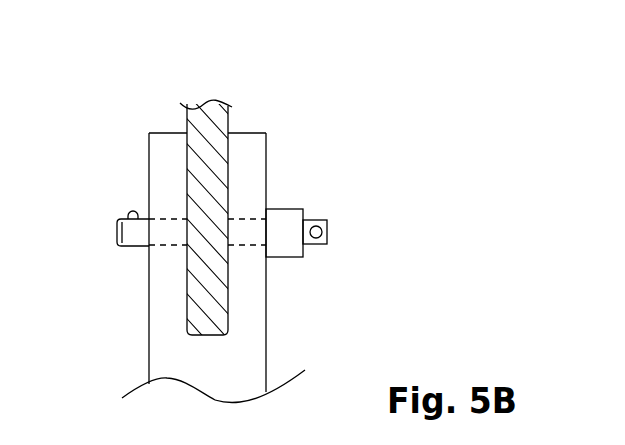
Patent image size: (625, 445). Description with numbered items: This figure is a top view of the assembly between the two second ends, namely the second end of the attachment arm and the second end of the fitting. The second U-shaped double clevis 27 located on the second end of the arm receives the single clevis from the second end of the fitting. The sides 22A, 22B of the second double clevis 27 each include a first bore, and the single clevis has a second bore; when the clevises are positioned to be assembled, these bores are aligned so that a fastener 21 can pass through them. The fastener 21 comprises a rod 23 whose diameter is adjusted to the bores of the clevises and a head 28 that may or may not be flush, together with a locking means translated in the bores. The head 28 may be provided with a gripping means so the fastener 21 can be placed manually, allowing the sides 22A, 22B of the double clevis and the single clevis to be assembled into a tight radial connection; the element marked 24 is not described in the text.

The fastener 21 is at (227, 242).
The first side of the second U-shaped double clevis 22A is at (168, 312).
The second side of the second U-shaped double clevis 22B is at (250, 302).
The rod 23 is at (165, 217).
The fastening screw 24 is at (316, 238).
The second U-shaped double clevis 27 is at (229, 168).
The head 28 is at (285, 208).